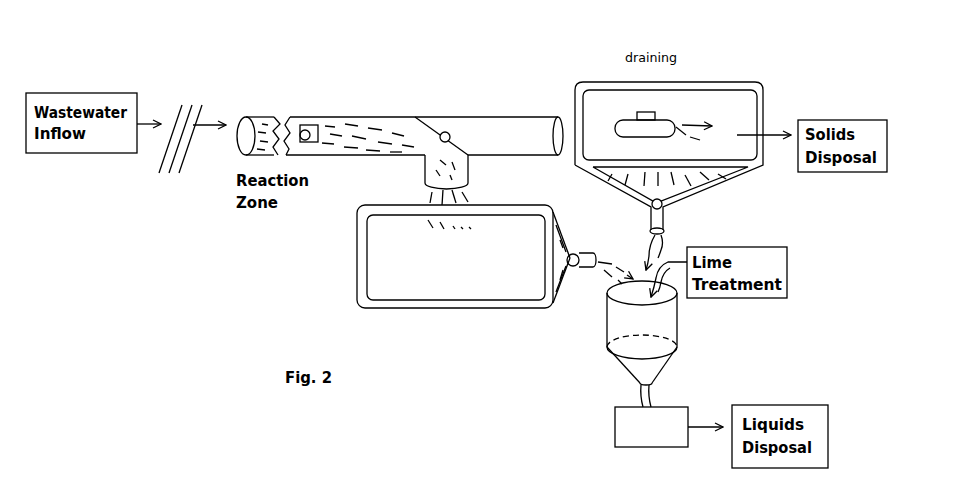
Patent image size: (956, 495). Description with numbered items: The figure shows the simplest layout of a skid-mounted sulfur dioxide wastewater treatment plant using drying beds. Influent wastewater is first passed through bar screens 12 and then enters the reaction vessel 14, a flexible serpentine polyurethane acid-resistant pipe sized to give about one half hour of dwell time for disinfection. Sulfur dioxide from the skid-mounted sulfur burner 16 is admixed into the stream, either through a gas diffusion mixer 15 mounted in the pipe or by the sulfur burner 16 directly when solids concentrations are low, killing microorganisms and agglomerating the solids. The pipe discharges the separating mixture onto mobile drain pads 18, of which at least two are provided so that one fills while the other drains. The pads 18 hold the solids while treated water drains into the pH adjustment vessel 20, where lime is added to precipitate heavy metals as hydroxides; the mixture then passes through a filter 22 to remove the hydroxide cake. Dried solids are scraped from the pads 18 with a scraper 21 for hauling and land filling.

The bar screens 12 is at (215, 144).
The reaction vessel 14 is at (487, 122).
The gas diffusion mixer 15 is at (318, 142).
The sulfur burner 16 is at (306, 129).
The mobile drain pads 18 is at (357, 262).
The pH adjustment vessel 20 is at (667, 323).
The scraper 21 is at (658, 127).
The filter 22 is at (622, 437).